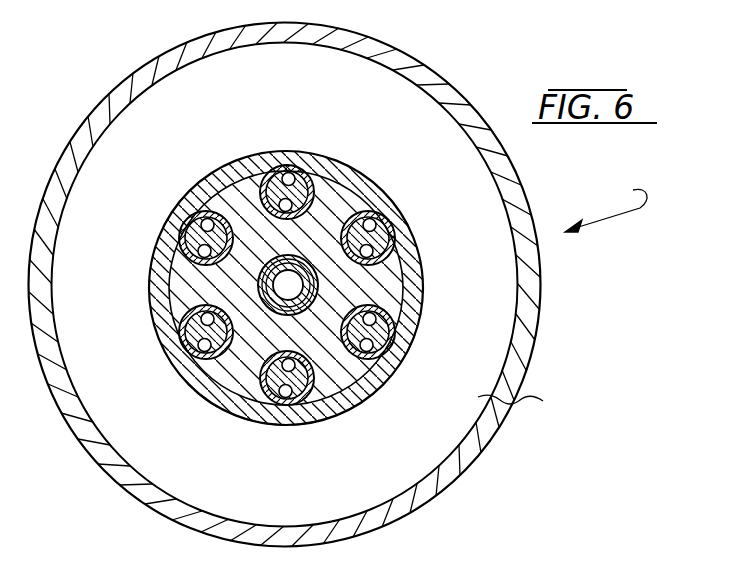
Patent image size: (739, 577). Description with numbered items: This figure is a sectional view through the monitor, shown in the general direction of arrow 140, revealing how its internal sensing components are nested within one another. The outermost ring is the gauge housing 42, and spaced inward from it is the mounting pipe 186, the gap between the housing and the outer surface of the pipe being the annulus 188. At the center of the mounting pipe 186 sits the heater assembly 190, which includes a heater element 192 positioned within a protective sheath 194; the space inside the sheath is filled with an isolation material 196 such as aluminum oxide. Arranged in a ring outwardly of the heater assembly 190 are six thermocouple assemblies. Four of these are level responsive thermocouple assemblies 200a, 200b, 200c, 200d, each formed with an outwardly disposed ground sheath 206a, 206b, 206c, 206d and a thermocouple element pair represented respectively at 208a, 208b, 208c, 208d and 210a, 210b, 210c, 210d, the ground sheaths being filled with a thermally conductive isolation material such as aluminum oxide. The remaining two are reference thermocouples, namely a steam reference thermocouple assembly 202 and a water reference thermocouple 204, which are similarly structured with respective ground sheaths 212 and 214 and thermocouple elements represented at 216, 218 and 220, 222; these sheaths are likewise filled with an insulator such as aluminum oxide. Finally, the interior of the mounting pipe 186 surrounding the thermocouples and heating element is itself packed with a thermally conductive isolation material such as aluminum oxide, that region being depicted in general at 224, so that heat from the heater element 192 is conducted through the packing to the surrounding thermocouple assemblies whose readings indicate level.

The gauge housing 42 is at (540, 306).
The cable assembly 140 is at (606, 204).
The mounting pipe 186 is at (345, 420).
The annulus 188 is at (533, 403).
The heater assembly 190 is at (324, 249).
The heater element 192 is at (318, 285).
The protective sheath 194 is at (272, 316).
The isolation material 196 is at (258, 284).
The thermocouple assembly 200a is at (161, 322).
The thermocouple assembly 200b is at (163, 240).
The thermocouple assembly 200c is at (270, 162).
The thermocouple assembly 200d is at (378, 198).
The steam reference thermocouple assembly 202 is at (243, 423).
The water reference thermocouple 204 is at (377, 379).
The ground sheath 206a is at (182, 379).
The ground sheath 206b is at (208, 211).
The ground sheath 206c is at (305, 170).
The ground sheath 206d is at (414, 250).
The thermocouple element 208a is at (173, 351).
The thermocouple element 208b is at (164, 268).
The thermocouple element 208c is at (262, 160).
The thermocouple element 208d is at (366, 200).
The thermocouple element 210a is at (151, 292).
The thermocouple element 210b is at (187, 213).
The thermocouple element 210c is at (294, 165).
The thermocouple element 210d is at (396, 232).
The ground sheath 212 is at (303, 430).
The ground sheath 214 is at (409, 316).
The thermocouple element 216 is at (205, 401).
The thermocouple element 218 is at (278, 440).
The thermocouple element 220 is at (422, 287).
The thermocouple element 222 is at (398, 343).
The thermally conductive isolation material region 224 is at (356, 414).